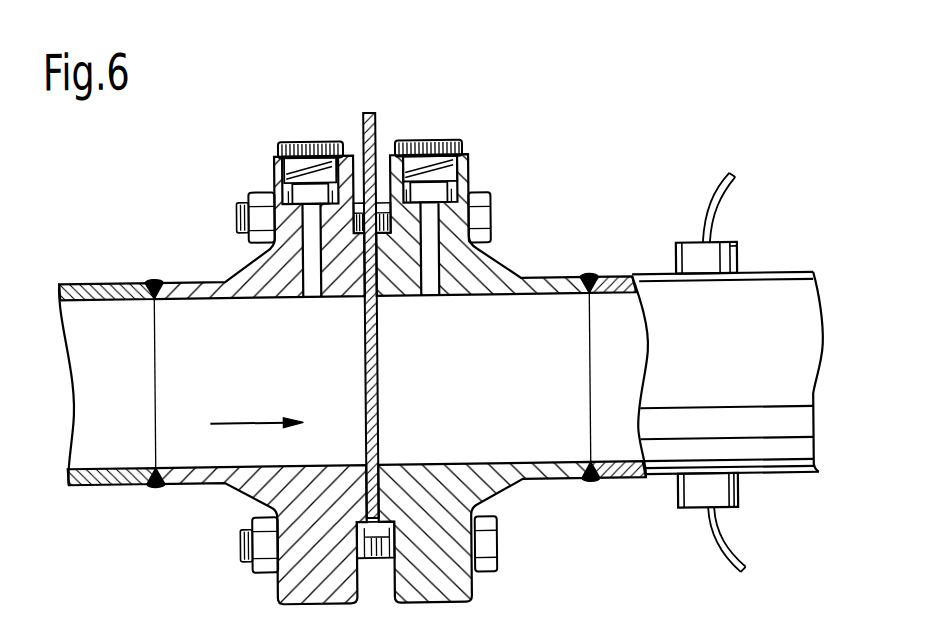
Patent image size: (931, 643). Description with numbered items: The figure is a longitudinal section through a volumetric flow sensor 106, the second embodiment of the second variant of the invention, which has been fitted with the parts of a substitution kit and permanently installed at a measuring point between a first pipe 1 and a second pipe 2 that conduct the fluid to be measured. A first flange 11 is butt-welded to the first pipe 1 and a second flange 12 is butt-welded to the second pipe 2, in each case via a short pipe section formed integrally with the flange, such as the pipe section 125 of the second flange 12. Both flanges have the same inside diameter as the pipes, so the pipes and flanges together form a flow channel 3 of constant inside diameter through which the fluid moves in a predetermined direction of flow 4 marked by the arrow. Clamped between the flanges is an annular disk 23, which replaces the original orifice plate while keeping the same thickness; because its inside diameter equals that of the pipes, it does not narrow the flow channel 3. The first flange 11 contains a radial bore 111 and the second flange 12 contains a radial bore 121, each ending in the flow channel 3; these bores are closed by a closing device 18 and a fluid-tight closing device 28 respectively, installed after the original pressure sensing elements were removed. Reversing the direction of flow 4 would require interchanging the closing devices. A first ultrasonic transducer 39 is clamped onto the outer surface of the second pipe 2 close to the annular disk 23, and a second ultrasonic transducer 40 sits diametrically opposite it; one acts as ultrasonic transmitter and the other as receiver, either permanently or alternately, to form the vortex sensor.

The first pipe 1 is at (98, 279).
The second pipe 2 is at (617, 288).
The flow channel 3 is at (802, 313).
The direction of flow 4 is at (240, 424).
The first flange 11 is at (276, 177).
The second flange 12 is at (470, 161).
The closing device 18 is at (306, 142).
The annular disk 23 is at (380, 117).
The fluid-tight closing device 28 is at (445, 142).
The first ultrasonic transducer 39 is at (733, 254).
The second ultrasonic transducer 40 is at (739, 505).
The flow sensor 106 is at (184, 230).
The radial bore 111 is at (309, 259).
The radial bore 121 is at (428, 264).
The pipe section 125 is at (544, 287).